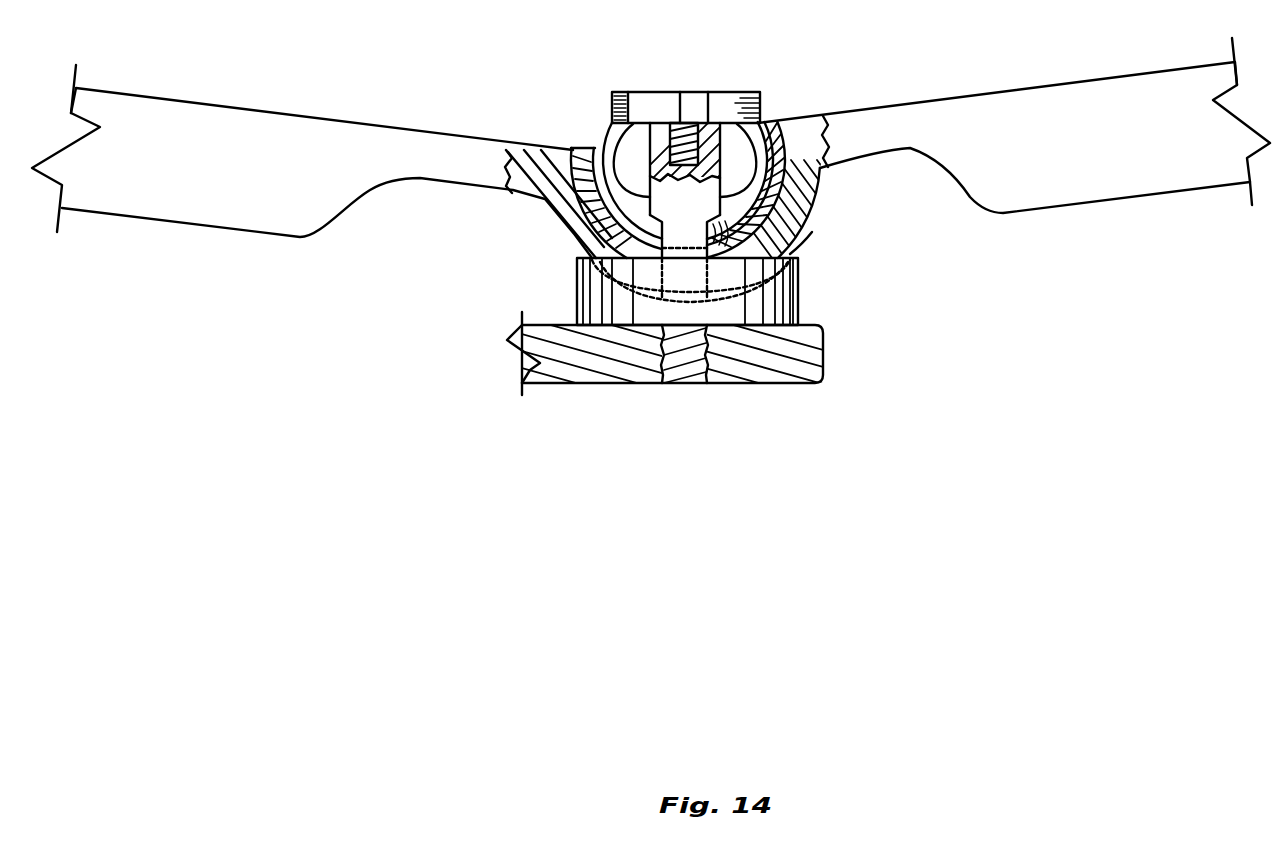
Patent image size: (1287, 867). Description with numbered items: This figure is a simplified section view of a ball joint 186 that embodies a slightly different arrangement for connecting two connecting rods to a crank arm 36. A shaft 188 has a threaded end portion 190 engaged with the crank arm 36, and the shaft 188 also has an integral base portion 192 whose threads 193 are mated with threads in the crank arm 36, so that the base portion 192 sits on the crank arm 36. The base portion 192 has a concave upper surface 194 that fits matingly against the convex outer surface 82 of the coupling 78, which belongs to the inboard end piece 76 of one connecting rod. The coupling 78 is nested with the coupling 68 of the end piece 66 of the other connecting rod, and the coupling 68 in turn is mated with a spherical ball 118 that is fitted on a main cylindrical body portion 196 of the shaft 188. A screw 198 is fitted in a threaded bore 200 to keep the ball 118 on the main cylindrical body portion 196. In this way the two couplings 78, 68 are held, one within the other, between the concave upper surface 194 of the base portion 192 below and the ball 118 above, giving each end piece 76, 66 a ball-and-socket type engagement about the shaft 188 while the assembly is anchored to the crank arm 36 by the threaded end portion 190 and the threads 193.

The inboard end piece 76 is at (378, 128).
The end piece 66 is at (1113, 198).
The ball joint 186 is at (550, 107).
The threaded bore 200 is at (680, 92).
The screw 198 is at (760, 100).
The shaft 188 is at (603, 110).
The main cylindrical body portion 196 is at (760, 145).
The spherical ball 118 is at (822, 128).
The coupling 68 is at (808, 172).
The coupling 78 is at (813, 238).
The concave upper surface 194 is at (566, 232).
The convex outer surface 82 is at (576, 243).
The base portion 192 is at (800, 292).
The crank arm 36 is at (823, 353).
The threaded end portion 190 is at (688, 377).
The threads 193 is at (713, 370).